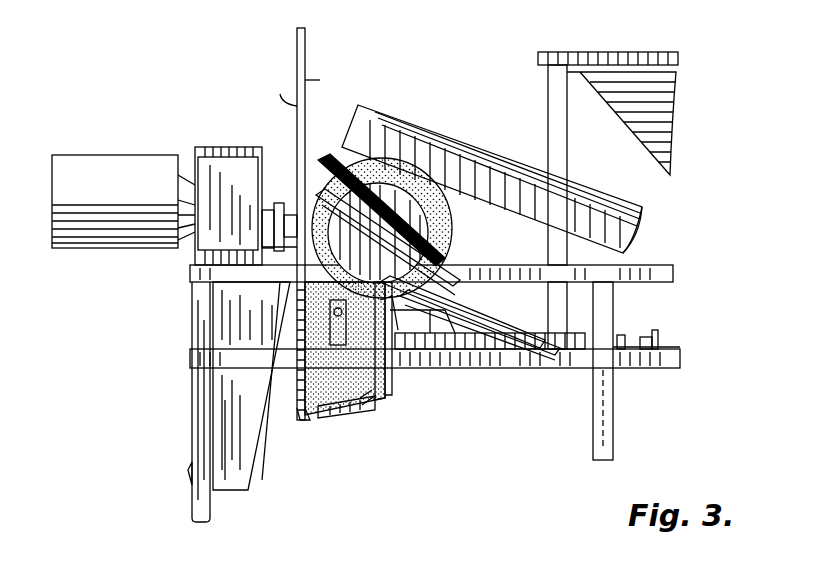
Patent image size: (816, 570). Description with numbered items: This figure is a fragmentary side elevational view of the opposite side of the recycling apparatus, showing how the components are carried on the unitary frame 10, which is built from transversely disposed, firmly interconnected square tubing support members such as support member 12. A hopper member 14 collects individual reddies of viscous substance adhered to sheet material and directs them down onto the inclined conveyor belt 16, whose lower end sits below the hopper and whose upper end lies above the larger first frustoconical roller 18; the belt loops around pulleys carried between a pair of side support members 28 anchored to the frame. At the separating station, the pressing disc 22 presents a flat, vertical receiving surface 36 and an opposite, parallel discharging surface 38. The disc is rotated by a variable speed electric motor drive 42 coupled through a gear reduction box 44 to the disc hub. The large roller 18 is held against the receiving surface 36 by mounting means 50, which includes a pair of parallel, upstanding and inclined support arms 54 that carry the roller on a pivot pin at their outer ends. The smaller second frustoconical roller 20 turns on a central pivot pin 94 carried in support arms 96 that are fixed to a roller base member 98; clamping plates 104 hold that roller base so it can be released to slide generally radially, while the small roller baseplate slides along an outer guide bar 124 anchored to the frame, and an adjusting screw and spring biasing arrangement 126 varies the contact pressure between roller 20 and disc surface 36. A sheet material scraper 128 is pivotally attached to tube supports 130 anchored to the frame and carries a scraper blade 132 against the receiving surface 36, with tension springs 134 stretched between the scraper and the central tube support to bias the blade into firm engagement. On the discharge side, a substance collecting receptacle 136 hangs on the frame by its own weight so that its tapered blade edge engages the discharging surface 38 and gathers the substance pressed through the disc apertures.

The unitary frame 10 is at (192, 340).
The square tubing support member 12 is at (613, 418).
The hopper member 14 is at (703, 112).
The conveyor belt 16 is at (486, 150).
The first frustoconical roller 18 is at (452, 236).
The second frustoconical roller 20 is at (313, 420).
The pressing disc 22 is at (305, 70).
The side support member 28 is at (632, 232).
The receiving surface 36 is at (305, 82).
The discharging surface 38 is at (277, 85).
The electric motor drive 42 is at (78, 170).
The gear reduction box 44 is at (218, 148).
The mounting means 50 is at (495, 298).
The support arms 54 is at (495, 302).
The central pivot pin 94 is at (345, 412).
The support arms 96 is at (372, 410).
The roller base member 98 is at (388, 398).
The clamping plates 104 is at (395, 370).
The outer guide bar 124 is at (496, 368).
The adjusting screw and spring biasing arrangement 126 is at (643, 312).
The sheet material scraper 128 is at (318, 180).
The tube supports 130 is at (418, 322).
The scraper blade 132 is at (283, 210).
The tension springs 134 is at (390, 199).
The substance collecting receptacle 136 is at (240, 470).